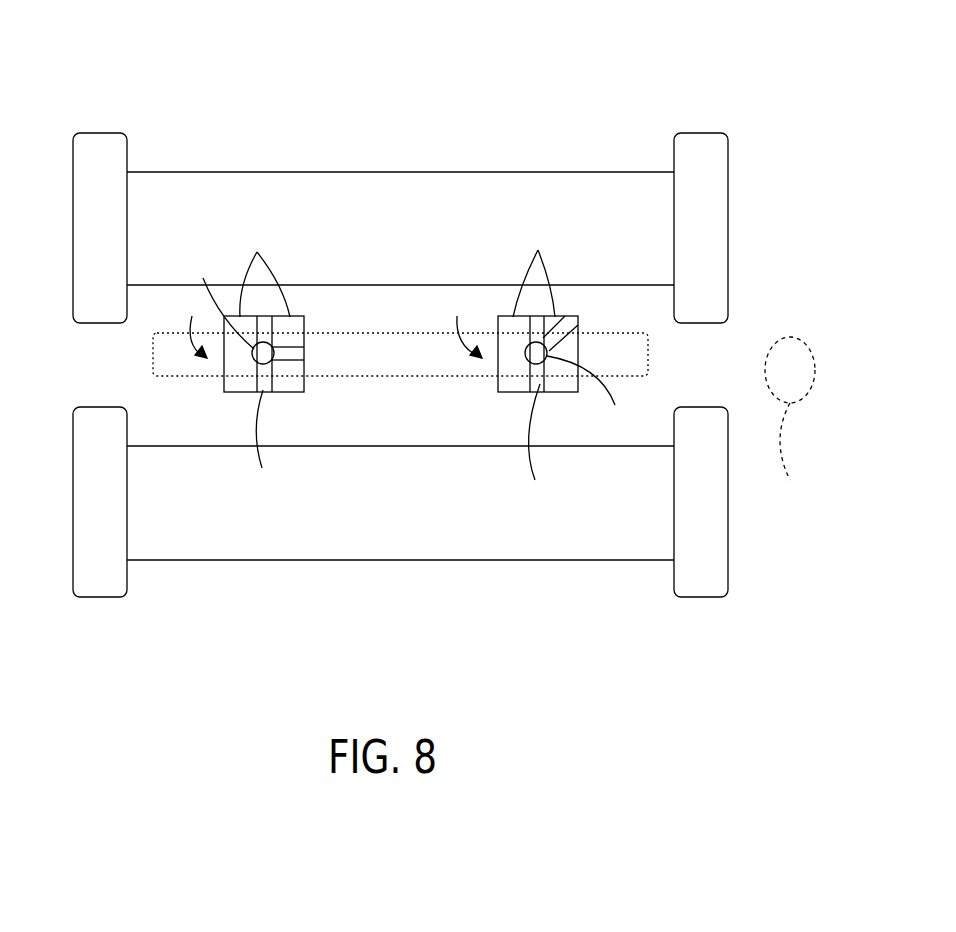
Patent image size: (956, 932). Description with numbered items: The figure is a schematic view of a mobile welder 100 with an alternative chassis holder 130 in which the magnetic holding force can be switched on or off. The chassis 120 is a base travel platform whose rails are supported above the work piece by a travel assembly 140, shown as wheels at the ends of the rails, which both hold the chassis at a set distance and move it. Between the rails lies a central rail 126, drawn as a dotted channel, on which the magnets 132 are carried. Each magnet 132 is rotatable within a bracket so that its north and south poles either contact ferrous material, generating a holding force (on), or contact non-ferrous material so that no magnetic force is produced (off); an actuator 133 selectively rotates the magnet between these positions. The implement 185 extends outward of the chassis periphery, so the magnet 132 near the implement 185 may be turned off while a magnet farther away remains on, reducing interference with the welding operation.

The mobile welder 100 is at (190, 112).
The chassis 120 is at (403, 171).
The central rail 126 is at (343, 377).
The chassis holder 130 is at (388, 422).
The magnet 132 is at (253, 360).
The actuator 133 is at (304, 351).
The travel assembly 140 is at (701, 120).
The implement 185 is at (798, 419).